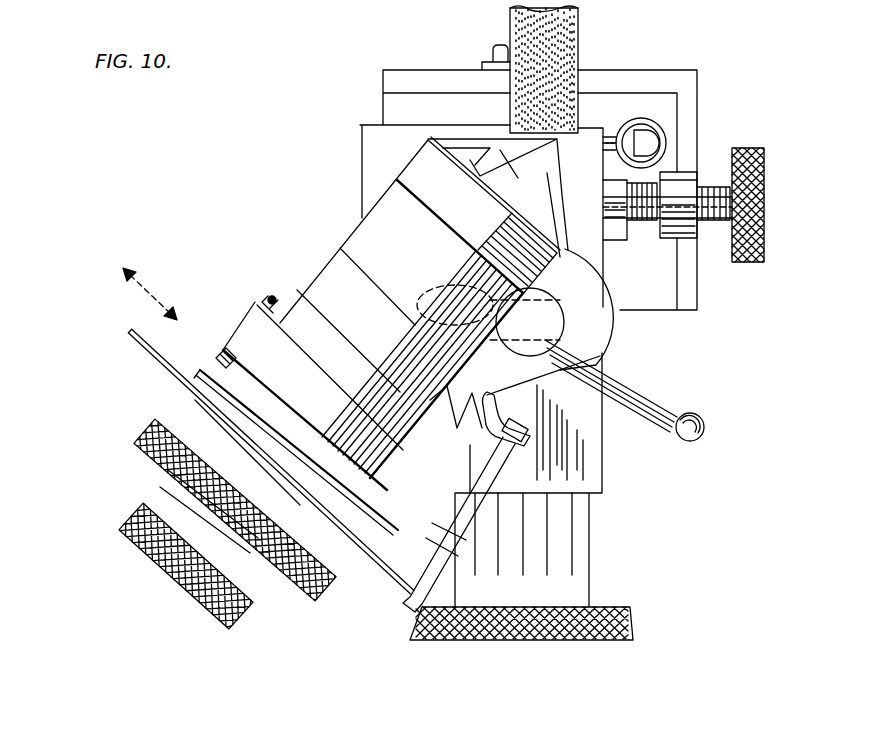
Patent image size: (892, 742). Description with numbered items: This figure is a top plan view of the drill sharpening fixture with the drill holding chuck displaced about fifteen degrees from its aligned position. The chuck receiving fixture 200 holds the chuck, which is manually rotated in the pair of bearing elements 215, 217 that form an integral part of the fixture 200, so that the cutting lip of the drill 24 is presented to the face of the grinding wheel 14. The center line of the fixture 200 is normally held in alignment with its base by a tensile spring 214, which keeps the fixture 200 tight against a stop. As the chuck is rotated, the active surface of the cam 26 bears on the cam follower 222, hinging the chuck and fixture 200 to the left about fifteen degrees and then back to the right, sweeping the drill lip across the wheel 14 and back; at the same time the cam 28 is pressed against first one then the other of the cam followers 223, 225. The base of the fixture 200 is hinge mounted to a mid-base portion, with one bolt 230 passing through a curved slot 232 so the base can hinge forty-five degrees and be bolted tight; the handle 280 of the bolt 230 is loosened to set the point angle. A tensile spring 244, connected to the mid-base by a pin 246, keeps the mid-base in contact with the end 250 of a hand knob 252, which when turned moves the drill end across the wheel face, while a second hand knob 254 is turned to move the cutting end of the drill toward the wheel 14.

The grinding wheel 14 is at (556, 49).
The drill 24 is at (535, 170).
The cam 26 is at (130, 340).
The cam 28 is at (200, 370).
The chuck receiving fixture 200 is at (368, 222).
The tensile spring 214 is at (490, 409).
The bearing element 215 is at (322, 402).
The bearing element 217 is at (483, 220).
The cam follower 222 is at (392, 600).
The cam follower 223 is at (375, 500).
The cam follower 225 is at (221, 355).
The bolt 230 is at (540, 318).
The curved slot 232 is at (606, 335).
The tensile spring 244 is at (657, 123).
The pin 246 is at (623, 138).
The end of hand knob 250 is at (608, 222).
The hand knob 252 is at (762, 200).
The hand knob 254 is at (625, 607).
The handle 280 is at (660, 400).